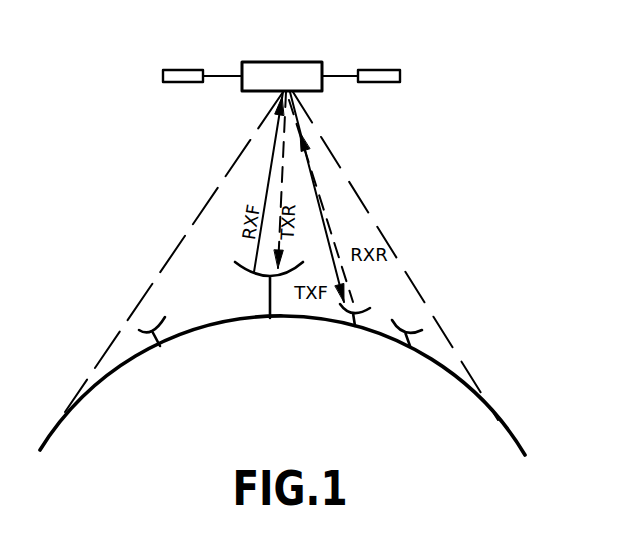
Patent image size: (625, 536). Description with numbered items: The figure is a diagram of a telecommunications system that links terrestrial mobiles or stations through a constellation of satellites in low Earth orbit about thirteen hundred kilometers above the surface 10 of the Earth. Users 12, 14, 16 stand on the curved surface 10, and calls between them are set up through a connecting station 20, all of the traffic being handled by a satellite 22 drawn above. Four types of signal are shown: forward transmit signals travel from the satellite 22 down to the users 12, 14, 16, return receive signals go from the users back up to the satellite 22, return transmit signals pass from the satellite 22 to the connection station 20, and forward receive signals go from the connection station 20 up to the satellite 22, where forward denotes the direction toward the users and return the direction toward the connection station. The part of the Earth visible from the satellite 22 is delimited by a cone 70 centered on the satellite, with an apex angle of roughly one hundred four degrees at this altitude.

The surface of the Earth 10 is at (452, 366).
The user 12 is at (411, 343).
The user 14 is at (360, 332).
The user 16 is at (147, 350).
The connection station 20 is at (272, 305).
The satellite 22 is at (298, 59).
The cone 70 is at (357, 200).